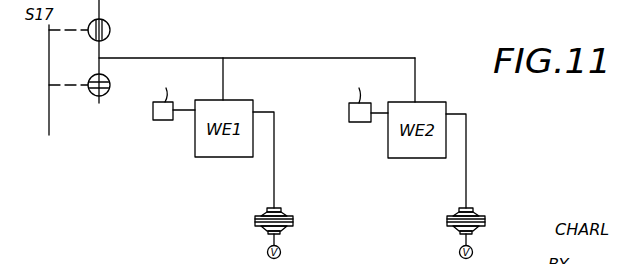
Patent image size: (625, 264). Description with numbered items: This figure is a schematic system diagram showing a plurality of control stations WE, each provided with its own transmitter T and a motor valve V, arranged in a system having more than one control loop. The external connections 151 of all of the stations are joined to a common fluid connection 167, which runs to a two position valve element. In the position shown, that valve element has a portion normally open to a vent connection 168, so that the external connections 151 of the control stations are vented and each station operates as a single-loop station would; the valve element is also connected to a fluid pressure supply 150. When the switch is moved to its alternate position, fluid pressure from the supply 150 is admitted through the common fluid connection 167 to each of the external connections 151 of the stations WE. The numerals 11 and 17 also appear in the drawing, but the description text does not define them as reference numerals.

The vent connection 168 is at (99, 6).
The fluid pressure supply 150 is at (111, 109).
The common fluid connection 167 is at (125, 58).
The external connections 151 is at (225, 88).
The timer connection 11 is at (185, 109).
The discharge line to valve 17 is at (275, 185).